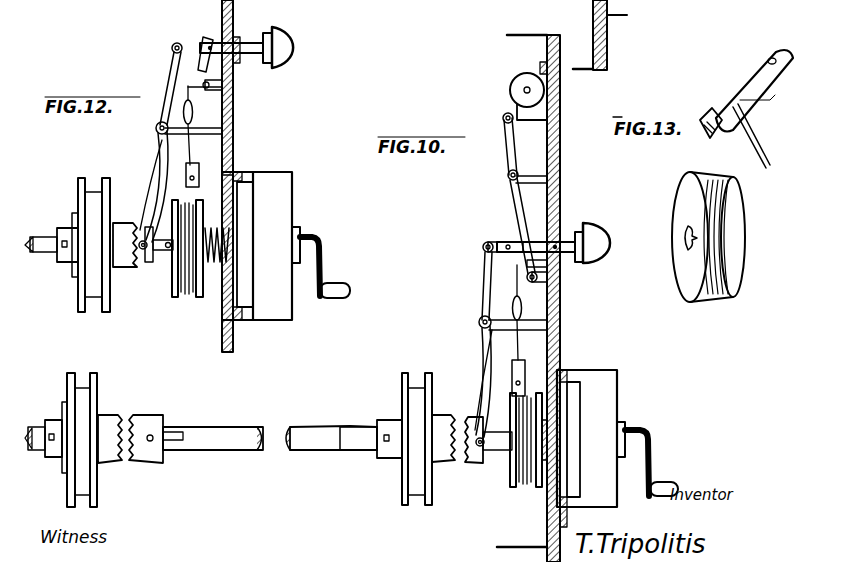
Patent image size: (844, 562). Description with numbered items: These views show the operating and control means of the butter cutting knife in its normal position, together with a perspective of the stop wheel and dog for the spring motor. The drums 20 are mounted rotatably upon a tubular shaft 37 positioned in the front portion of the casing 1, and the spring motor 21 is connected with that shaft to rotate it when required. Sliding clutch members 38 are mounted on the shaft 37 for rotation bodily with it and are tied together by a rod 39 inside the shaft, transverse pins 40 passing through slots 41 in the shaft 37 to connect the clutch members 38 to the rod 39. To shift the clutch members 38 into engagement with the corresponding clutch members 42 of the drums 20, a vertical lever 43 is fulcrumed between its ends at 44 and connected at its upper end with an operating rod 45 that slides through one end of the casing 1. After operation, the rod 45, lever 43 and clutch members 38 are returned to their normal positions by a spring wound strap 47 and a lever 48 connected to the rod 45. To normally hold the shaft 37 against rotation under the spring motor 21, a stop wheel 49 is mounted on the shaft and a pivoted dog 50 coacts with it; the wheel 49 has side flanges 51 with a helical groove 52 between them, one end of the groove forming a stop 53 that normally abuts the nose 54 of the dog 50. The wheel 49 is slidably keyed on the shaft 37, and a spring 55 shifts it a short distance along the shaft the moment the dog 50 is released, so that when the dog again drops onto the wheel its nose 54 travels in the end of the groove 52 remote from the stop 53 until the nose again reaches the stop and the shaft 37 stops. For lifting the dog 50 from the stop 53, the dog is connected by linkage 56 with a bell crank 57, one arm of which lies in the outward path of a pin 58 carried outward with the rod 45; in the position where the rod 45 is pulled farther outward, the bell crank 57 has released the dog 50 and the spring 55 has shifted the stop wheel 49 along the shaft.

In FIG. 12, the casing 1 is at (232, 132).
In FIG. 10, the casing 1 is at (567, 145).
In FIG. 12, the drums 20 is at (80, 290).
In FIG. 10, the drums 20 is at (72, 488).
In FIG. 12, the spring motor 21 is at (280, 196).
In FIG. 10, the spring motor 21 is at (612, 410).
In FIG. 12, the tubular shaft 37 is at (57, 238).
In FIG. 10, the tubular shaft 37 is at (325, 452).
In FIG. 12, the sliding clutch members 38 is at (203, 36).
In FIG. 10, the sliding clutch members 38 is at (155, 465).
In FIG. 12, the rod 39 is at (50, 240).
In FIG. 10, the rod 39 is at (268, 452).
In FIG. 12, the transverse pins 40 is at (147, 264).
In FIG. 10, the transverse pins 40 is at (152, 434).
In FIG. 12, the slots 41 is at (147, 240).
In FIG. 10, the slots 41 is at (180, 432).
In FIG. 12, the clutch members of the drums 42 is at (118, 268).
In FIG. 10, the clutch members of the drums 42 is at (108, 465).
In FIG. 12, the vertical lever 43 is at (170, 72).
In FIG. 10, the vertical lever 43 is at (483, 294).
In FIG. 12, the fulcrum 44 is at (156, 132).
In FIG. 10, the fulcrum 44 is at (478, 323).
In FIG. 12, the operating rod 45 is at (253, 42).
In FIG. 10, the operating rod 45 is at (565, 240).
In FIG. 10, the spring wound strap 47 is at (515, 107).
In FIG. 10, the lever 48 is at (508, 192).
In FIG. 12, the stop wheel 49 is at (170, 292).
In FIG. 10, the stop wheel 49 is at (508, 523).
In FIG. 13, the stop wheel 49 is at (682, 282).
In FIG. 12, the dog 50 is at (200, 168).
In FIG. 10, the dog 50 is at (527, 368).
In FIG. 13, the dog 50 is at (742, 70).
In FIG. 12, the side flanges 51 is at (178, 297).
In FIG. 10, the side flanges 51 is at (510, 495).
In FIG. 13, the side flanges 51 is at (700, 185).
In FIG. 12, the helical groove 52 is at (226, 240).
In FIG. 10, the helical groove 52 is at (564, 235).
In FIG. 13, the helical groove 52 is at (728, 268).
In FIG. 12, the stop 53 is at (160, 160).
In FIG. 10, the stop 53 is at (510, 410).
In FIG. 13, the stop 53 is at (708, 175).
In FIG. 12, the nose 54 is at (200, 178).
In FIG. 10, the nose 54 is at (527, 378).
In FIG. 13, the nose 54 is at (703, 118).
In FIG. 12, the spring 55 is at (228, 247).
In FIG. 10, the spring 55 is at (548, 440).
In FIG. 12, the linkage 56 is at (232, 142).
In FIG. 10, the linkage 56 is at (548, 336).
In FIG. 12, the bell crank 57 is at (232, 72).
In FIG. 10, the bell crank 57 is at (560, 272).
In FIG. 10, the pin 58 is at (505, 237).